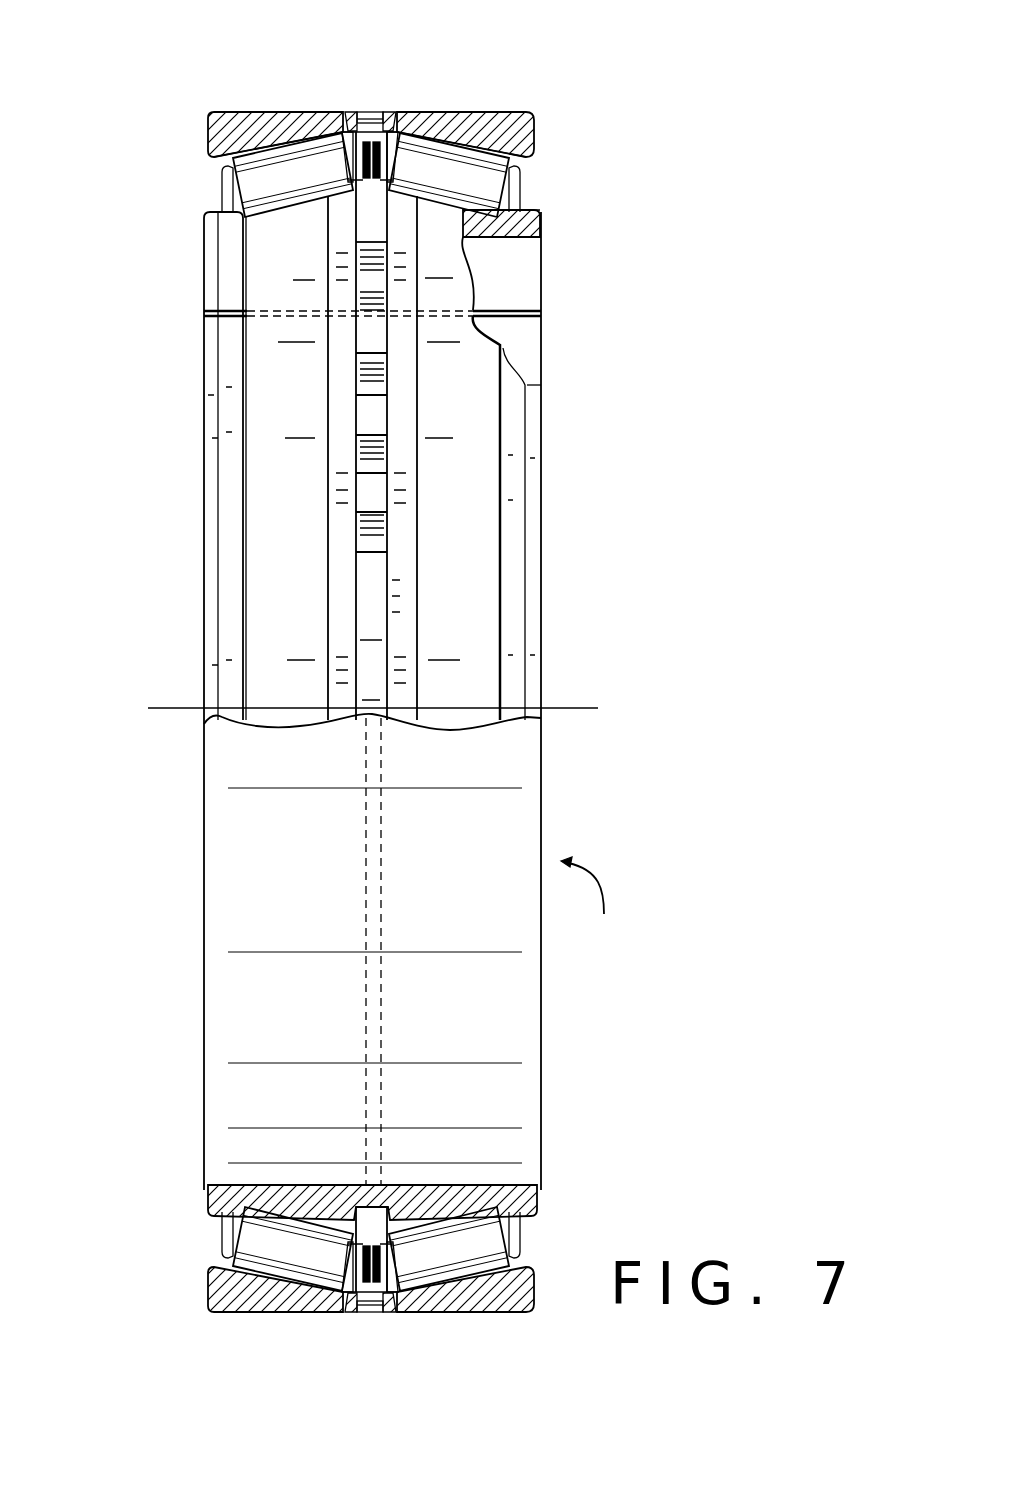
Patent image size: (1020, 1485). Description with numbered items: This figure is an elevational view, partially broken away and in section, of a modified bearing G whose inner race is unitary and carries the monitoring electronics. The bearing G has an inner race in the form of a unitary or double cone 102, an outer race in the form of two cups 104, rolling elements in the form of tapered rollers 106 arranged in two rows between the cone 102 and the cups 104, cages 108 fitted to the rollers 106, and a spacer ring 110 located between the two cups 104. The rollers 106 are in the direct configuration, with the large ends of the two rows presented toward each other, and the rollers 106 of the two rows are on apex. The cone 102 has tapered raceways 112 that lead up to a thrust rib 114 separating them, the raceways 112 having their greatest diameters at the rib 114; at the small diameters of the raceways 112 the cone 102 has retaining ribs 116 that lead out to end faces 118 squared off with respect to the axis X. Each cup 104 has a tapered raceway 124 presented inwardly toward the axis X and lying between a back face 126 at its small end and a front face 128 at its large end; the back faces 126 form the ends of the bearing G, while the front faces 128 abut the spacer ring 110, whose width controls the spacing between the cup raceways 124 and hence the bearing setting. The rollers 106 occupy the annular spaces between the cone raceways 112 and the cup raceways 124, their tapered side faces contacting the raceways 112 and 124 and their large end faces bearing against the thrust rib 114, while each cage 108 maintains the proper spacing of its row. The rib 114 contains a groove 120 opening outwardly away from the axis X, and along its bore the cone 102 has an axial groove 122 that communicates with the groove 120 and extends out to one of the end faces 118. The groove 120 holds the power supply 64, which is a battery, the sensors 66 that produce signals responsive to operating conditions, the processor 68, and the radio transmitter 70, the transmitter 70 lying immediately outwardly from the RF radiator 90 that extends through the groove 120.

The power supply 64 is at (372, 278).
The sensors 66 is at (373, 527).
The processor 68 is at (372, 295).
The radio transmitter 70 is at (372, 307).
The RF radiator 90 is at (518, 308).
The double cone 102 is at (288, 1190).
The cups 104 is at (288, 123).
The tapered rollers 106 is at (285, 180).
The cages 108 is at (222, 172).
The spacer ring 110 is at (370, 110).
The tapered raceways 112 is at (280, 558).
The thrust rib 114 is at (392, 582).
The retaining ribs 116 is at (528, 207).
The end faces 118 is at (540, 230).
The groove 120 is at (373, 622).
The axial groove 122 is at (505, 318).
The tapered raceway 124 is at (272, 152).
The back face 126 is at (207, 137).
The front face 128 is at (353, 110).
The axis X is at (388, 708).
The bearing G is at (587, 899).